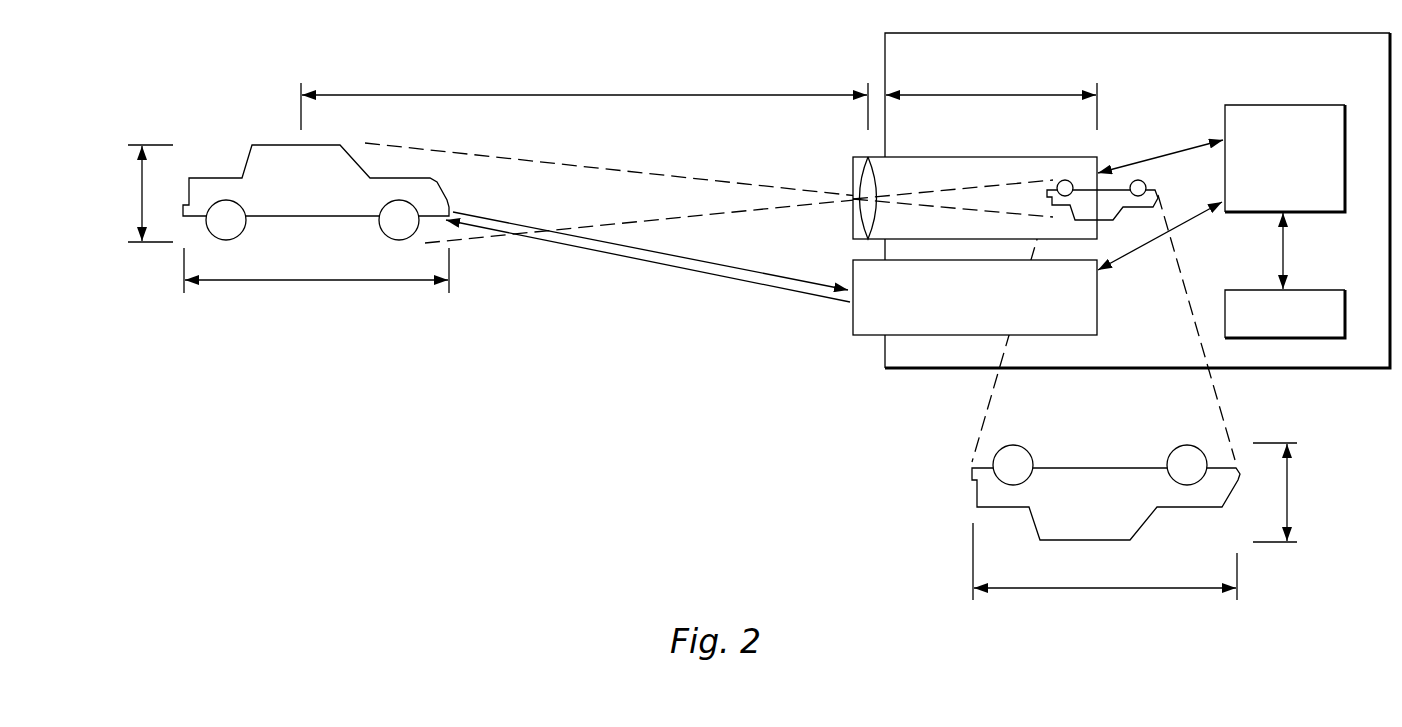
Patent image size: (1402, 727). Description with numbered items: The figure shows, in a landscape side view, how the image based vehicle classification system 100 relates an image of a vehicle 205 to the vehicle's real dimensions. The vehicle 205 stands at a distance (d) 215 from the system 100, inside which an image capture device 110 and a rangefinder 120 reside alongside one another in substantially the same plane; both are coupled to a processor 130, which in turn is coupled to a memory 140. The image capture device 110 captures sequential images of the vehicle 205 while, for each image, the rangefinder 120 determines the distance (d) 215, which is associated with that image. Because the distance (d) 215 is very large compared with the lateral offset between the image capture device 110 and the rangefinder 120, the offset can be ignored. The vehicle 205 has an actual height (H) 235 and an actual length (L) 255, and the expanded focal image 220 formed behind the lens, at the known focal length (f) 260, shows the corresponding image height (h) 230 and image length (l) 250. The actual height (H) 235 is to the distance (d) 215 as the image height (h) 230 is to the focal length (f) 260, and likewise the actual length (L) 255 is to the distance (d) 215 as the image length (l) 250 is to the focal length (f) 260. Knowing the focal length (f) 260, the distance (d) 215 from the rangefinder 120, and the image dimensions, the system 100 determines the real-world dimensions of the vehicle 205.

The image based vehicle classification system 100 is at (1327, 15).
The image capture device 110 is at (1028, 133).
The rangefinder 120 is at (1097, 308).
The processor 130 is at (1289, 82).
The memory 140 is at (1327, 268).
The vehicle 205 is at (323, 197).
The distance (d) 215 is at (717, 71).
The expanded focal image 220 is at (980, 433).
The image height (h) 230 is at (1289, 474).
The actual height (H) 235 is at (141, 175).
The image length (l) 250 is at (1146, 588).
The actual length (L) 255 is at (361, 280).
The focal length (f) 260 is at (1020, 73).